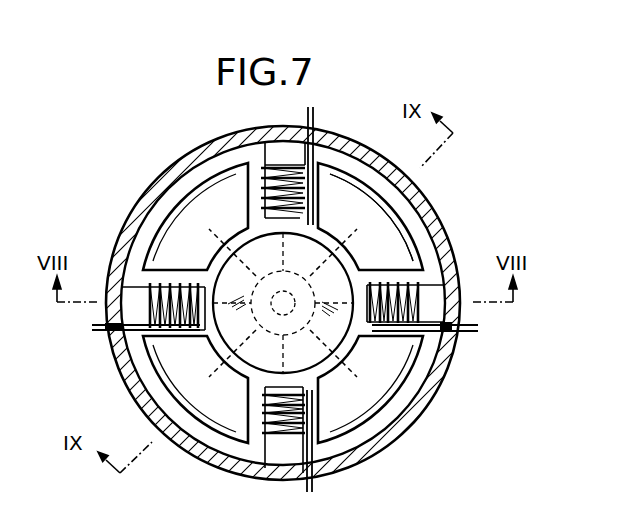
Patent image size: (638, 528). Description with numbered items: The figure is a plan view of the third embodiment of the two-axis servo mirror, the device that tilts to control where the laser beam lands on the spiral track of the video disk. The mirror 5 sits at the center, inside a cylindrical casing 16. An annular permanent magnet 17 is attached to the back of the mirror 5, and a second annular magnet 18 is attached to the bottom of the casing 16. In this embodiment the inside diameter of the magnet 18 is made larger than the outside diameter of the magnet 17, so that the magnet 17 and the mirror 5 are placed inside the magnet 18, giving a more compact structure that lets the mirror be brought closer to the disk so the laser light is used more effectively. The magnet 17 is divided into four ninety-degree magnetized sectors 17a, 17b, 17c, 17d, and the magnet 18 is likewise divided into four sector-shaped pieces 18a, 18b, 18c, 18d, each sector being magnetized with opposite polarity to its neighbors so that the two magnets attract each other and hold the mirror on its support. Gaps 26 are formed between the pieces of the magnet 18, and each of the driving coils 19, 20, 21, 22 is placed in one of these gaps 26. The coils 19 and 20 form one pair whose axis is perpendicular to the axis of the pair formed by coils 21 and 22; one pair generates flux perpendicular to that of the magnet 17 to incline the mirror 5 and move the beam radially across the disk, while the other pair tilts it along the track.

The two-axis servo mirror 5 is at (315, 258).
The cylindrical casing 16 is at (434, 378).
The annular permanent magnet 17 is at (323, 340).
The magnetized sector 17a is at (322, 340).
The magnetized sector 17b is at (228, 355).
The magnetized sector 17c is at (238, 247).
The magnetized sector 17d is at (315, 228).
The annular magnet 18 is at (410, 225).
The magnetized sector 18a is at (368, 397).
The magnetized sector 18b is at (168, 373).
The magnetized sector 18c is at (188, 200).
The magnetized sector 18d is at (373, 220).
The drive coil 19 is at (183, 332).
The drive coil 20 is at (383, 283).
The drive coil 21 is at (300, 165).
The drive coil 22 is at (295, 434).
The gap 26 is at (250, 196).